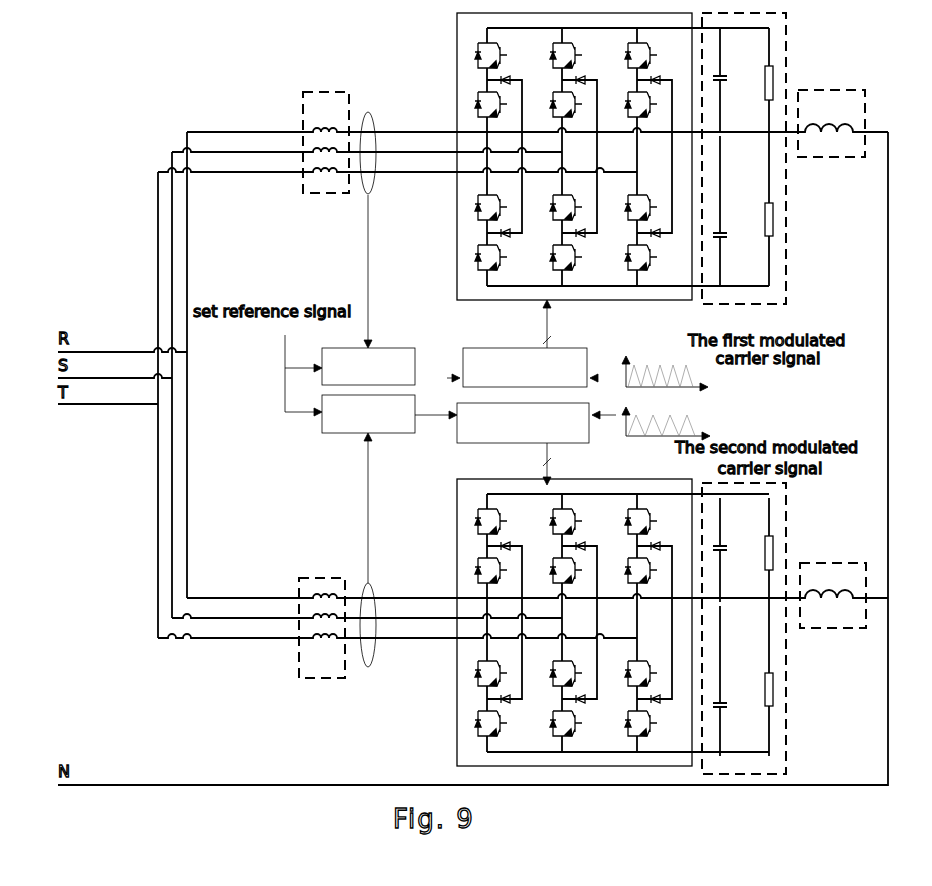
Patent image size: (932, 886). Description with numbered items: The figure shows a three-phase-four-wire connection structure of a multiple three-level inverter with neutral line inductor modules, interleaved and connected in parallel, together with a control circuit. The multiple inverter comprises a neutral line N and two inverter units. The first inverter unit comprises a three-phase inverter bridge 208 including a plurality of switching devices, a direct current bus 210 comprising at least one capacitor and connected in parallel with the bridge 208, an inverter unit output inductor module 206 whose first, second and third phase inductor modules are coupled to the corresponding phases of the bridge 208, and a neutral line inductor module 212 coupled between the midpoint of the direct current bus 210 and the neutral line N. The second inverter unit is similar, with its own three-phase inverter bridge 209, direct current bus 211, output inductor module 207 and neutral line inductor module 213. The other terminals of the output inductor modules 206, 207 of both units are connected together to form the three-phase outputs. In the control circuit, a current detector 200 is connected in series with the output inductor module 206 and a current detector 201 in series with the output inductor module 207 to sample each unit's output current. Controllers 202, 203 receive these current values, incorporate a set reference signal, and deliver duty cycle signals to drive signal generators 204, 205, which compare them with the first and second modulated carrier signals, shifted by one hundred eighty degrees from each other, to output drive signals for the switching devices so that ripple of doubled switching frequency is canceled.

The current detector 200 is at (368, 196).
The current detector 201 is at (370, 668).
The controller 202 is at (398, 348).
The controller 203 is at (390, 433).
The drive signal generator 204 is at (565, 357).
The drive signal generator 205 is at (563, 443).
The inverter unit output inductor module 206 is at (303, 193).
The output inductor module 207 is at (307, 680).
The three-phase inverter bridge 208 is at (457, 292).
The three-phase inverter bridge 209 is at (457, 688).
The direct current bus 210 is at (786, 235).
The direct current bus 211 is at (786, 765).
The neutral line inductor module 212 is at (832, 157).
The neutral line inductor module 213 is at (845, 628).